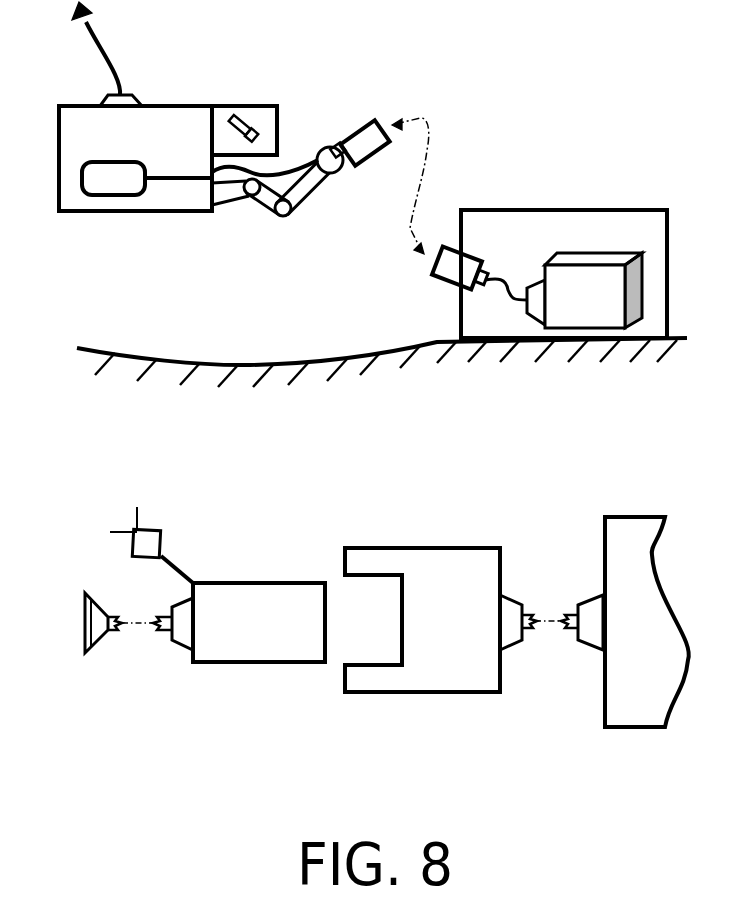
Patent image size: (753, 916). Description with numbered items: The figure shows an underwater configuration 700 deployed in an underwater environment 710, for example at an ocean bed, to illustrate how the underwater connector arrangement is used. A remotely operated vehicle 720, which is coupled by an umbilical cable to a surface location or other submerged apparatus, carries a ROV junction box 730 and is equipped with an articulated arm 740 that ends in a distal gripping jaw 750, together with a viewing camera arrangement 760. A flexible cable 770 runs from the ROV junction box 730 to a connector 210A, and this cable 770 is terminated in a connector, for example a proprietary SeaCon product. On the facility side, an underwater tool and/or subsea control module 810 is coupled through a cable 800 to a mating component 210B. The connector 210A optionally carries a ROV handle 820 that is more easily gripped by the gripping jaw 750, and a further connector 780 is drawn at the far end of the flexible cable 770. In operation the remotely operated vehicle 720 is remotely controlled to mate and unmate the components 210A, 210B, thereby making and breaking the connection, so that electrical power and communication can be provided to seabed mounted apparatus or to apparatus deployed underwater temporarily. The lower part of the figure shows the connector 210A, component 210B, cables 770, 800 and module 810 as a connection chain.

The underwater configuration 700 is at (507, 76).
The underwater environment 710 is at (327, 33).
The remotely operated vehicle (ROV) 720 is at (174, 153).
The ROV junction box 730 is at (113, 178).
The articulated arm 740 is at (262, 202).
The gripping jaw 750 is at (333, 173).
The viewing camera arrangement 760 is at (255, 128).
The flexible cable 770 is at (285, 170).
The connector 780 is at (93, 618).
The cable 800 is at (518, 280).
The underwater tool and/or subsea control module 810 is at (600, 282).
The ROV handle 820 is at (163, 540).
The connector 210A is at (348, 136).
The component 210B is at (453, 268).